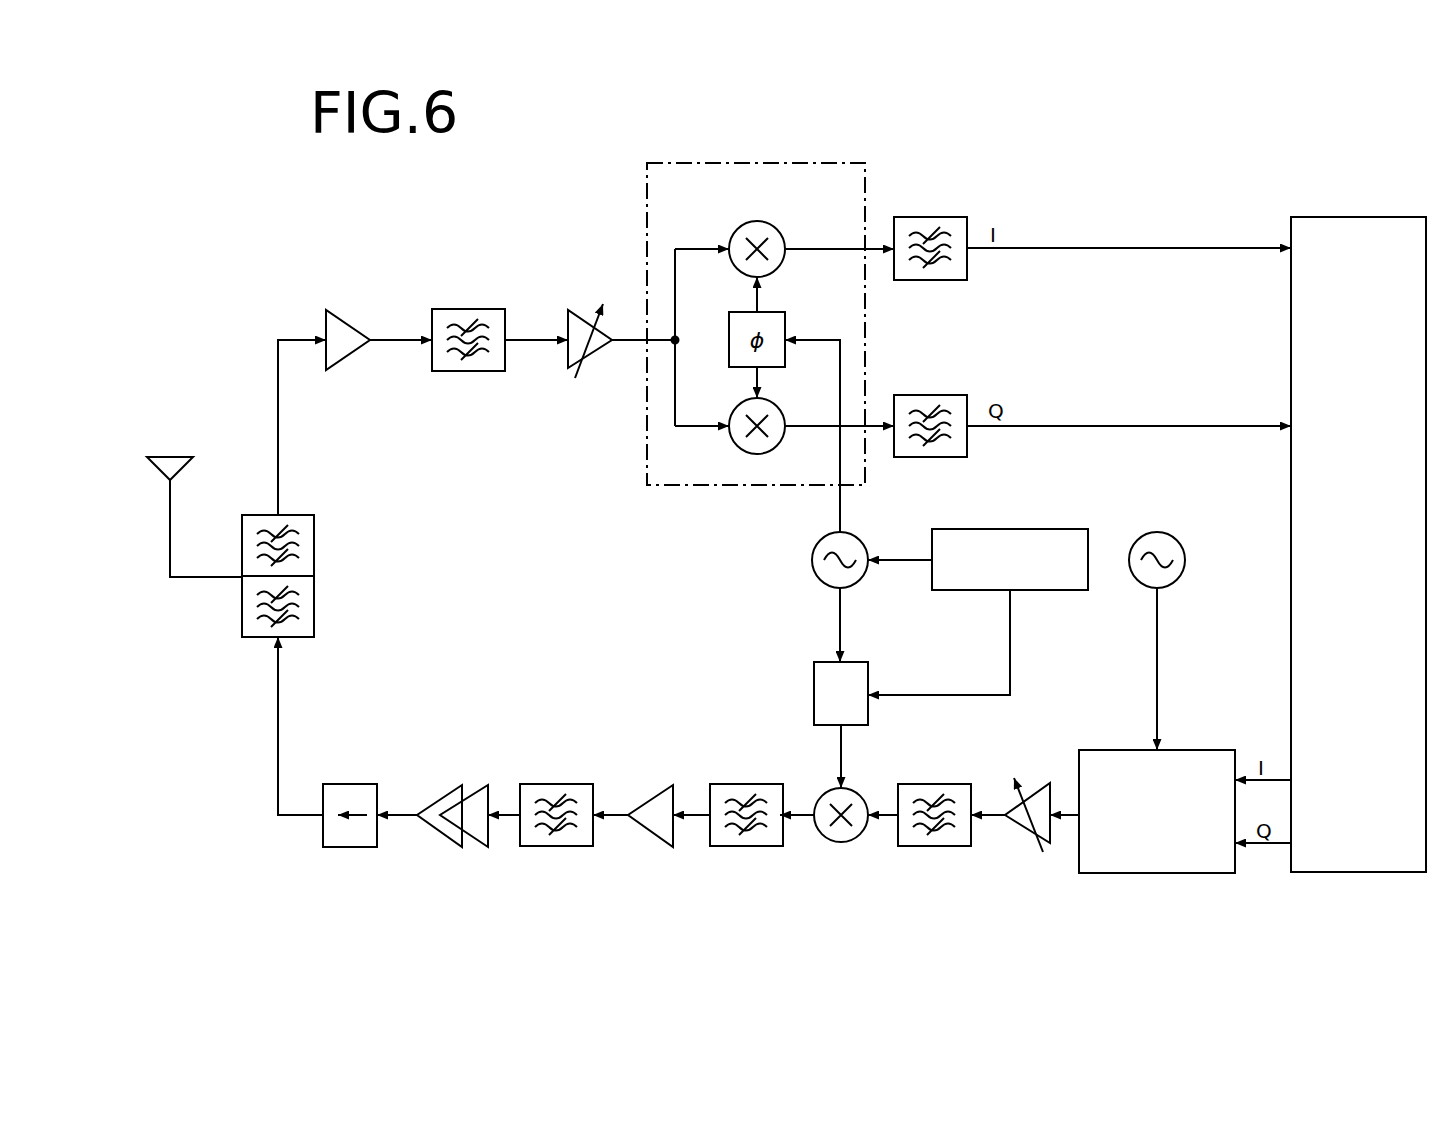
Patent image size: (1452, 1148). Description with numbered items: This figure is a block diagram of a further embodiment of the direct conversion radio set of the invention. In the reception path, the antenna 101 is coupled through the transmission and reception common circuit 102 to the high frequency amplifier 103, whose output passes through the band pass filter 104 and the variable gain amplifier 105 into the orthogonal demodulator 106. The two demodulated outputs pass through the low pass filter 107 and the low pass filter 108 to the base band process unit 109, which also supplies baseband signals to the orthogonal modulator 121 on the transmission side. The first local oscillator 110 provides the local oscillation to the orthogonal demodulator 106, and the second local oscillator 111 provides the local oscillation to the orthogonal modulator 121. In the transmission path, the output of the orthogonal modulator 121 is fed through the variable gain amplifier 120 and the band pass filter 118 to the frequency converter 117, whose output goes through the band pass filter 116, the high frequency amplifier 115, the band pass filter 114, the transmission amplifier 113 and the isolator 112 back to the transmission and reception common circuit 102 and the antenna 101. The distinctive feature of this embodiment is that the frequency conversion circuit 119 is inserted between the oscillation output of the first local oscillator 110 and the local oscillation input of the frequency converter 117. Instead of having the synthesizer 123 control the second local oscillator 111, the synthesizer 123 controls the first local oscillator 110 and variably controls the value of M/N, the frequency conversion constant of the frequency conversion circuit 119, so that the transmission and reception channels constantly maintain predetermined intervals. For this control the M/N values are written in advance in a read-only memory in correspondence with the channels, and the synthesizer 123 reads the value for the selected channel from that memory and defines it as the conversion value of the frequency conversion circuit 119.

The antenna 101 is at (182, 457).
The transmission and reception common circuit 102 is at (314, 525).
The high frequency amplifier 103 is at (354, 317).
The band pass filter 104 is at (489, 308).
The variable gain amplifier 105 is at (578, 309).
The orthogonal demodulator 106 is at (865, 169).
The low pass filter 107 is at (950, 217).
The low pass filter 108 is at (949, 395).
The base band process unit 109 is at (1397, 217).
The first local oscillator 110 is at (860, 537).
The second local oscillator 111 is at (1169, 533).
The isolator 112 is at (358, 784).
The transmission amplifier 113 is at (451, 785).
The band pass filter 114 is at (575, 784).
The high frequency amplifier 115 is at (670, 785).
The band pass filter 116 is at (765, 782).
The frequency converter 117 is at (862, 790).
The band pass filter 118 is at (954, 782).
The frequency conversion circuit 119 is at (870, 672).
The variable gain amplifier 120 is at (1028, 777).
The orthogonal modulator 121 is at (1214, 750).
The synthesizer 123 is at (1064, 529).